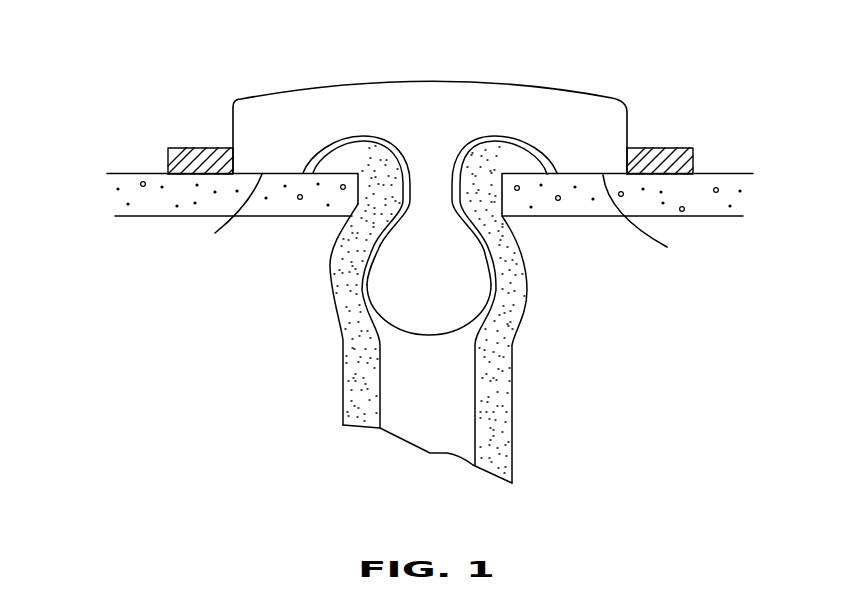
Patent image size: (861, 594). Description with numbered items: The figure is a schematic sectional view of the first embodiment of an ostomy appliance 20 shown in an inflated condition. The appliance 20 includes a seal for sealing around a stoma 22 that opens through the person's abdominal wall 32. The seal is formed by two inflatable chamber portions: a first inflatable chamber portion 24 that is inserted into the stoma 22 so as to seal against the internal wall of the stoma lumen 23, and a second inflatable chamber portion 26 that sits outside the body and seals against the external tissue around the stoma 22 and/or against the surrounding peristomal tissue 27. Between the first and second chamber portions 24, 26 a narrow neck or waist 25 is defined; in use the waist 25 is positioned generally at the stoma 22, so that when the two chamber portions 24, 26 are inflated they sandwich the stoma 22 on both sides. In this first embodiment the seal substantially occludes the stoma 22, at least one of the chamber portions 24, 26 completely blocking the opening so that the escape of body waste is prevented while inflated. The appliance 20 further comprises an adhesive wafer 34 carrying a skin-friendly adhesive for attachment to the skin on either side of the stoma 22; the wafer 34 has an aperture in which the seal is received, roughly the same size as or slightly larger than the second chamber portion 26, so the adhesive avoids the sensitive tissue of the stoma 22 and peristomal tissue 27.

The ostomy appliance 20 is at (486, 255).
The stoma 22 is at (482, 200).
The stoma lumen 23 is at (497, 275).
The first inflatable chamber portion 24 is at (467, 300).
The waist 25 is at (425, 198).
The second inflatable chamber portion 26 is at (413, 103).
The peristomal tissue 27 is at (445, 217).
The abdominal wall 32 is at (100, 197).
The adhesive wafer 34 is at (200, 147).